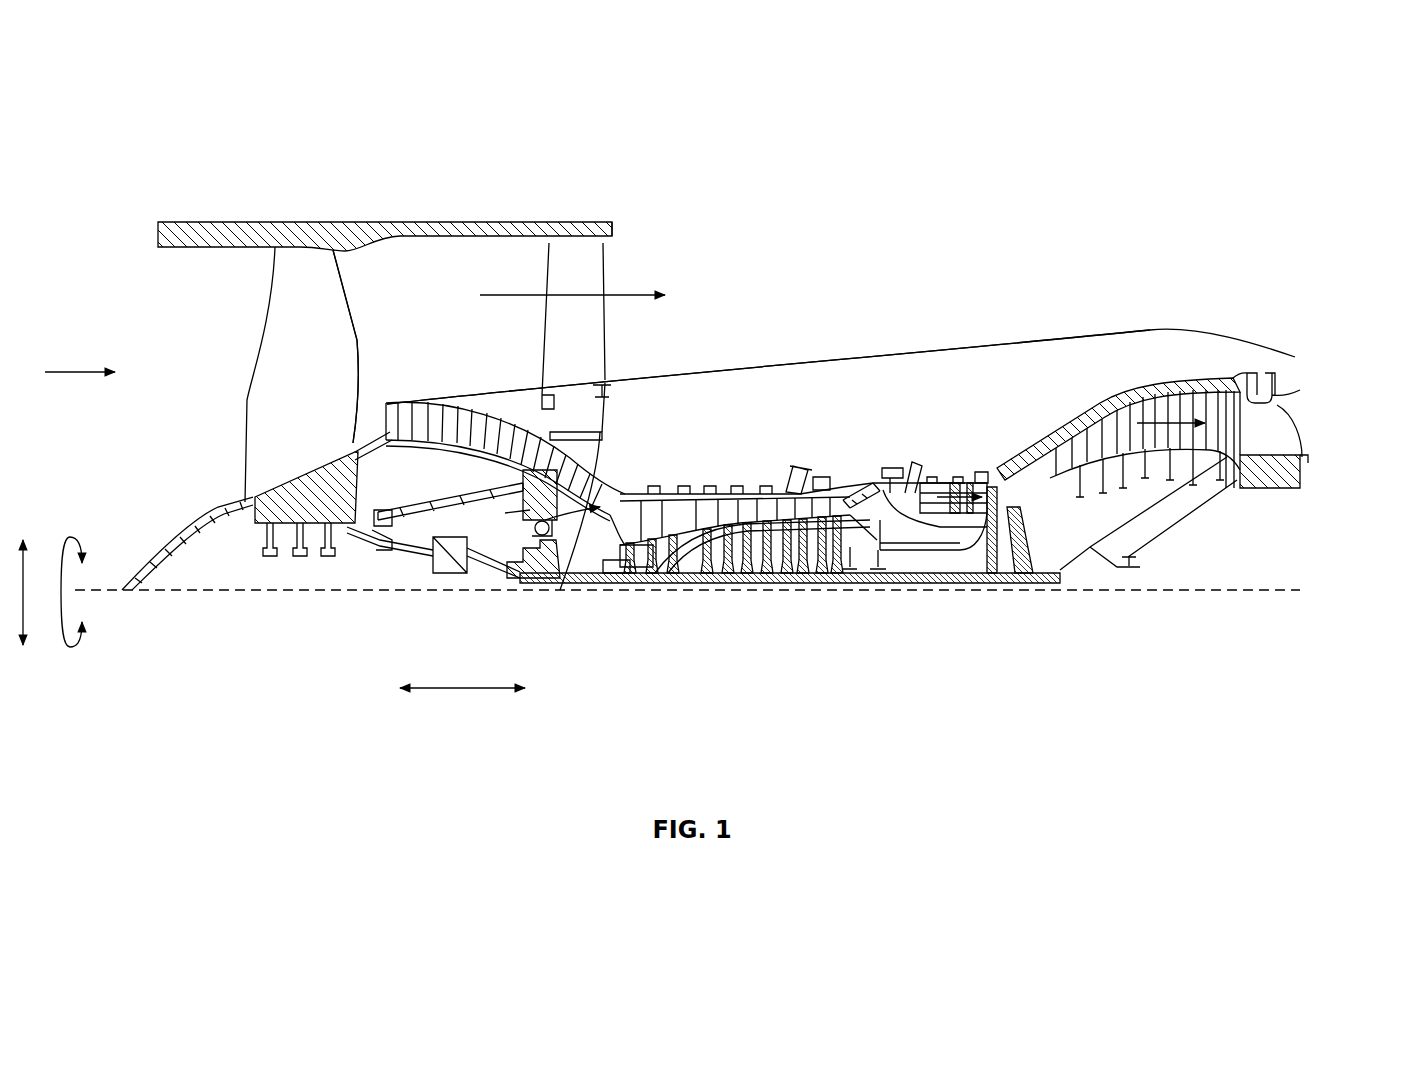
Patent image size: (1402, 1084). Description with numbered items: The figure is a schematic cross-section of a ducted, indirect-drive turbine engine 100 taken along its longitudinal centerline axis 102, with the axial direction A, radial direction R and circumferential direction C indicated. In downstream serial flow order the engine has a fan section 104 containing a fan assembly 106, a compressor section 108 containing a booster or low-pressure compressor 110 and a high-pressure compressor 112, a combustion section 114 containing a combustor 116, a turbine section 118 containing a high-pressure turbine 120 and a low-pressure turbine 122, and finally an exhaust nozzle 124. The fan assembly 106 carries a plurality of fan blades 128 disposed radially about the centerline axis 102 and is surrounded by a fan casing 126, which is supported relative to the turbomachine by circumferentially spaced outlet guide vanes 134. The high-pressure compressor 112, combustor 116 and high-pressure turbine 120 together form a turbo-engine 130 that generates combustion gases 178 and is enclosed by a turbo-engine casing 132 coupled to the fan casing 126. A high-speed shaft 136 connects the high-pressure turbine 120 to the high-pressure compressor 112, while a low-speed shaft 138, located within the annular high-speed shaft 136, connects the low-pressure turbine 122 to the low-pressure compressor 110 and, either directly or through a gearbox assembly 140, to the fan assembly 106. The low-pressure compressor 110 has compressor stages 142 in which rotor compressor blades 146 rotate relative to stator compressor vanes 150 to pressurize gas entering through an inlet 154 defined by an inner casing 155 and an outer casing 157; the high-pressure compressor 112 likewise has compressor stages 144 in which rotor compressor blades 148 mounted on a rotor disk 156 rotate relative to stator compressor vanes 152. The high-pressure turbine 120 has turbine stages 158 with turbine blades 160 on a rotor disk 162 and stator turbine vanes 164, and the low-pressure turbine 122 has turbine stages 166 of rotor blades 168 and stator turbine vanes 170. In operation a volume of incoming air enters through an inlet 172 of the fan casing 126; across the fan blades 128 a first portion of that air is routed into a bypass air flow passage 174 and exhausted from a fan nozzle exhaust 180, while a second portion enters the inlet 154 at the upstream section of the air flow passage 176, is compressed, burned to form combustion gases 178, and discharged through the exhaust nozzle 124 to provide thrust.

The turbine engine 100 is at (845, 228).
The longitudinal centerline axis 102 is at (257, 593).
The fan section 104 is at (385, 333).
The fan assembly 106 is at (230, 420).
The compressor section 108 is at (620, 392).
The low-pressure compressor 110 is at (507, 402).
The high-pressure compressor 112 is at (746, 477).
The combustion section 114 is at (928, 430).
The combustor 116 is at (928, 490).
The turbine section 118 is at (1129, 456).
The high-pressure turbine 120 is at (1118, 386).
The low-pressure turbine 122 is at (1299, 401).
The exhaust nozzle 124 is at (1303, 403).
The fan casing 126 is at (318, 222).
The fan blades 128 is at (330, 290).
The turbo-engine 130 is at (860, 378).
The turbo-engine casing 132 is at (1217, 368).
The outlet guide vanes 134 is at (560, 308).
The high-speed shaft 136 is at (892, 560).
The low-speed shaft 138 is at (513, 583).
The gearbox assembly 140 is at (447, 580).
The compressor stages 142 is at (494, 404).
The compressor stages 144 is at (746, 477).
The rotor compressor blades 146 is at (425, 398).
The rotor compressor blades 148 is at (645, 435).
The stator compressor vanes 150 is at (478, 337).
The stator compressor vanes 152 is at (643, 520).
The inlet 154 is at (378, 425).
The inner casing 155 is at (390, 440).
The rotor disk 156 is at (665, 583).
The outer casing 157 is at (357, 410).
The turbine stages 158 is at (943, 441).
The turbine blades 160 is at (990, 454).
The rotor disk 162 is at (1000, 553).
The stator turbine vanes 164 is at (950, 483).
The turbine stages 166 is at (1145, 416).
The rotor blades 168 is at (1103, 410).
The stator turbine vanes 170 is at (1077, 433).
The inlet 172 is at (147, 272).
The bypass air flow passage 174 is at (517, 270).
The air flow passage 176 is at (553, 568).
The combustion gases 178 is at (1207, 460).
The fan nozzle exhaust 180 is at (616, 243).